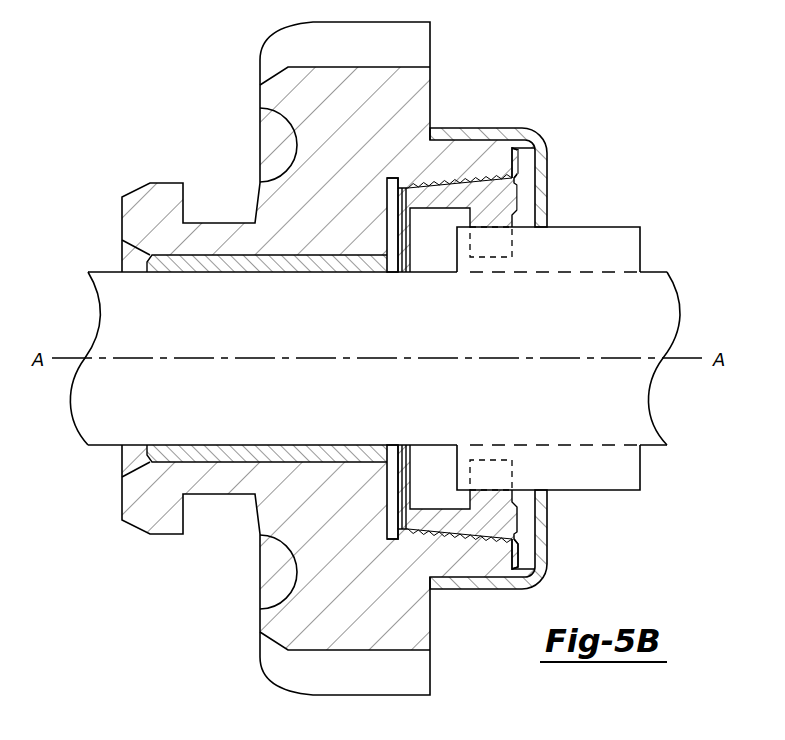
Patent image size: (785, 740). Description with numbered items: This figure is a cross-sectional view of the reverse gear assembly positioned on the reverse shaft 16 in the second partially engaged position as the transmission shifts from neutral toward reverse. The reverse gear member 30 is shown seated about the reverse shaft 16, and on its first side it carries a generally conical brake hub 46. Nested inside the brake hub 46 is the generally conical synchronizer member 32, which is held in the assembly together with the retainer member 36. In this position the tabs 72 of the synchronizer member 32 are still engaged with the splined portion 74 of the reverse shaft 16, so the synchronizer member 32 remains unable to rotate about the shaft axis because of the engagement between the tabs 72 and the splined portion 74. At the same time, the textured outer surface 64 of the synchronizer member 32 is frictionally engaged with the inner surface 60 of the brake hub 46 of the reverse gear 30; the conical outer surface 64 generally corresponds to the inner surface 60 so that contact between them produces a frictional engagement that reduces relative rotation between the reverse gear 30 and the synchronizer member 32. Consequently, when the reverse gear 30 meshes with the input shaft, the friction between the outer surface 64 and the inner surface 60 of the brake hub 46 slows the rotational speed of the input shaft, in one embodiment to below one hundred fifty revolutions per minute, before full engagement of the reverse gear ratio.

The reverse shaft 16 is at (678, 303).
The reverse gear member 30 is at (420, 80).
The synchronizer member 32 is at (392, 370).
The retainer member 36 is at (497, 582).
The brake hub 46 is at (513, 197).
The inner surface of the brake hub 60 is at (465, 187).
The outer surface of the synchronizer member 64 is at (490, 182).
The tabs of the synchronizer member 72 is at (494, 465).
The splined portion of the reverse shaft 74 is at (577, 478).